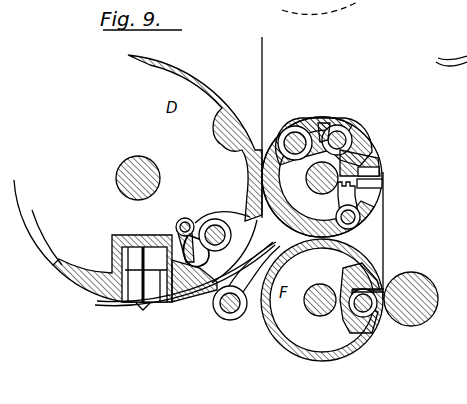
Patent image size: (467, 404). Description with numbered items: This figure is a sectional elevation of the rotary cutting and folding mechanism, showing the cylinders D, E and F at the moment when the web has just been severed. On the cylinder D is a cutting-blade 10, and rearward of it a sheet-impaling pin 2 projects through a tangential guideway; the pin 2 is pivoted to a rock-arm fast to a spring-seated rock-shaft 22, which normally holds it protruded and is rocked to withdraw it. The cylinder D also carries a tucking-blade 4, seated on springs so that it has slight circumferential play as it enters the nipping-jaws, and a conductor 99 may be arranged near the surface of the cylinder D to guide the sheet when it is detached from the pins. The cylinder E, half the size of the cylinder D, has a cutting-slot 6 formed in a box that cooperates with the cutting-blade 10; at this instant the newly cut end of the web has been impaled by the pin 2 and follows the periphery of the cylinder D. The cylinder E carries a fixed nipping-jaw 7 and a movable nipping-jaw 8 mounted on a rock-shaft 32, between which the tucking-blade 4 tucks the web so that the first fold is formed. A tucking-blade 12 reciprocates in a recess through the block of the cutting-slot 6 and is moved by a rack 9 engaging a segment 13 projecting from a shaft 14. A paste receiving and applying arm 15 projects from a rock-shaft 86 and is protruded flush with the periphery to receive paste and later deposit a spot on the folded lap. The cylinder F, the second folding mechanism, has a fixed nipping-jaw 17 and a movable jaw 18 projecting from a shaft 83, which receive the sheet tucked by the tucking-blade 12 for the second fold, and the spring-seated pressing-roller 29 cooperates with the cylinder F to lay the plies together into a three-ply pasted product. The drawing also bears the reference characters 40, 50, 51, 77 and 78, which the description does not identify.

The sheet-impaling pin 2 is at (181, 222).
The tucking-blade 4 is at (247, 118).
The cutting-slot 6 is at (380, 173).
The fixed nipping-jaw 7 is at (276, 142).
The movable nipping-jaw 8 is at (299, 141).
The rack 9 is at (384, 186).
The cutting-blade 10 is at (112, 272).
The tucking-blade 12 is at (368, 172).
The segment 13 is at (348, 198).
The shaft 14 is at (352, 226).
The paste receiving and applying arm 15 is at (326, 132).
The fixed nipping-jaw 17 is at (373, 334).
The movable jaw 18 is at (384, 306).
The rock-shaft 22 is at (216, 224).
The spring-seated pressing-roller 29 is at (412, 278).
The rock-shaft 32 is at (295, 159).
The roller 40 is at (138, 158).
The hub of disc 50 is at (322, 186).
The hub of drum F 51 is at (320, 284).
The dashed circle (adjacent figure) 77 is at (326, 11).
The hook (adjacent figure) 78 is at (434, 34).
The shaft 83 is at (352, 312).
The rock-shaft 86 is at (350, 134).
The conductor 99 is at (179, 306).